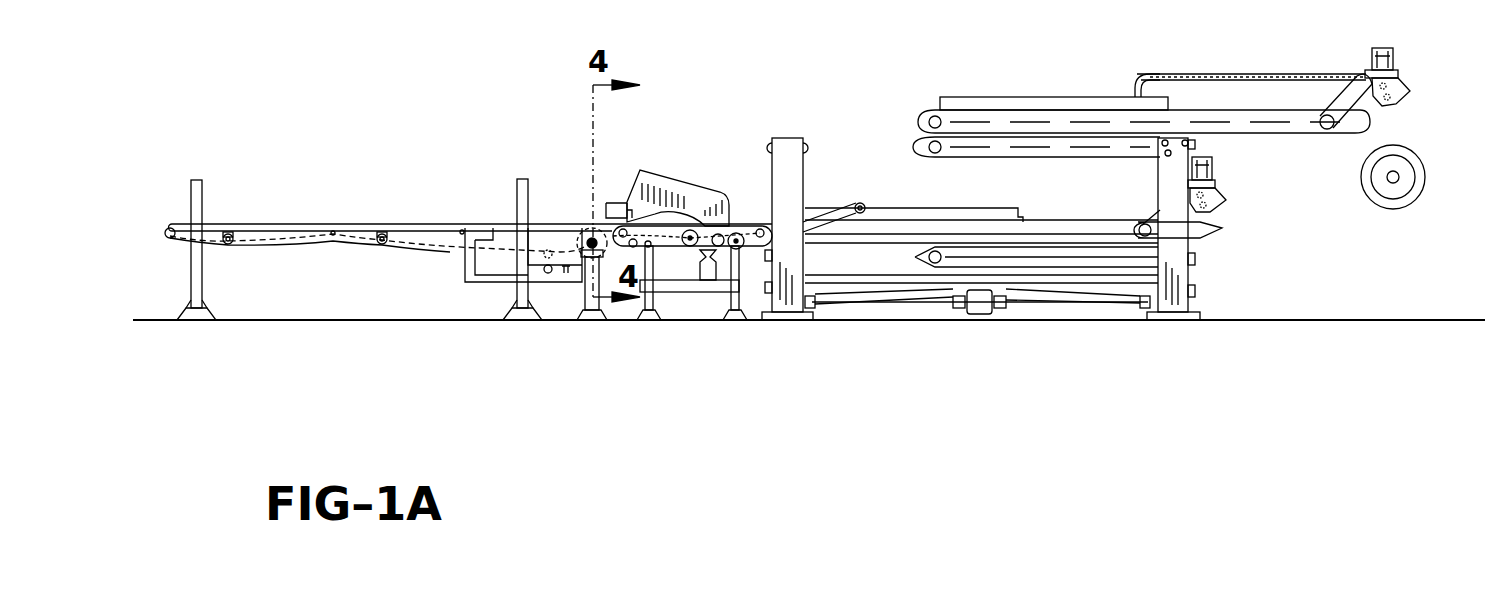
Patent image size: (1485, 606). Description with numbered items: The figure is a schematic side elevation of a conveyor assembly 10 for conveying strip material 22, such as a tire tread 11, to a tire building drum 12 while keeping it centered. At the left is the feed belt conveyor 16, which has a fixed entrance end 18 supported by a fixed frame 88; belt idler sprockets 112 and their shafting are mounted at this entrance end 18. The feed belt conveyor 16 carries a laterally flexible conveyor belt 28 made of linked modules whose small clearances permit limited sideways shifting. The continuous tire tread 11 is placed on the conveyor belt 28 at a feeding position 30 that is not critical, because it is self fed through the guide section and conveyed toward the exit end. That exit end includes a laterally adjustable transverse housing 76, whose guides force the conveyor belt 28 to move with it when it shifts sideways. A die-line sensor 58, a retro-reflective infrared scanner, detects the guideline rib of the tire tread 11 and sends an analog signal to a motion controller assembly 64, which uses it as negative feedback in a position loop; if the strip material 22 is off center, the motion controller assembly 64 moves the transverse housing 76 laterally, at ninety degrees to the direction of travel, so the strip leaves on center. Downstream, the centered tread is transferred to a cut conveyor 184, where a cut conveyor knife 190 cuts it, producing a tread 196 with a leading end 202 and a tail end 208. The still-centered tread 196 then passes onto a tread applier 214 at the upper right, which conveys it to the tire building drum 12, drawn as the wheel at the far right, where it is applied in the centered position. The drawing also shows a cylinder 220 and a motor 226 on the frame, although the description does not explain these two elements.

The conveyor assembly 10 is at (451, 362).
The tire tread 11 is at (455, 223).
The tire building drum 12 is at (1422, 162).
The feed belt conveyor 16 is at (437, 252).
The entrance end 18 is at (172, 230).
The strip material 22 is at (397, 223).
The conveyor belt 28 is at (288, 223).
The feeding position 30 is at (335, 223).
The die-line sensor 58 is at (612, 202).
The motion controller assembly 64 is at (575, 284).
The transverse housing 76 is at (588, 230).
The fixed frame 88 is at (205, 322).
The belt idler sprockets 112 is at (172, 243).
The cut conveyor 184 is at (728, 224).
The cut conveyor knife 190 is at (668, 172).
The tread 196 is at (762, 226).
The leading end 202 is at (1345, 76).
The tail end 208 is at (1140, 73).
The tread applier 214 is at (968, 96).
The cylinder 220 is at (810, 200).
The motor 226 is at (1408, 88).